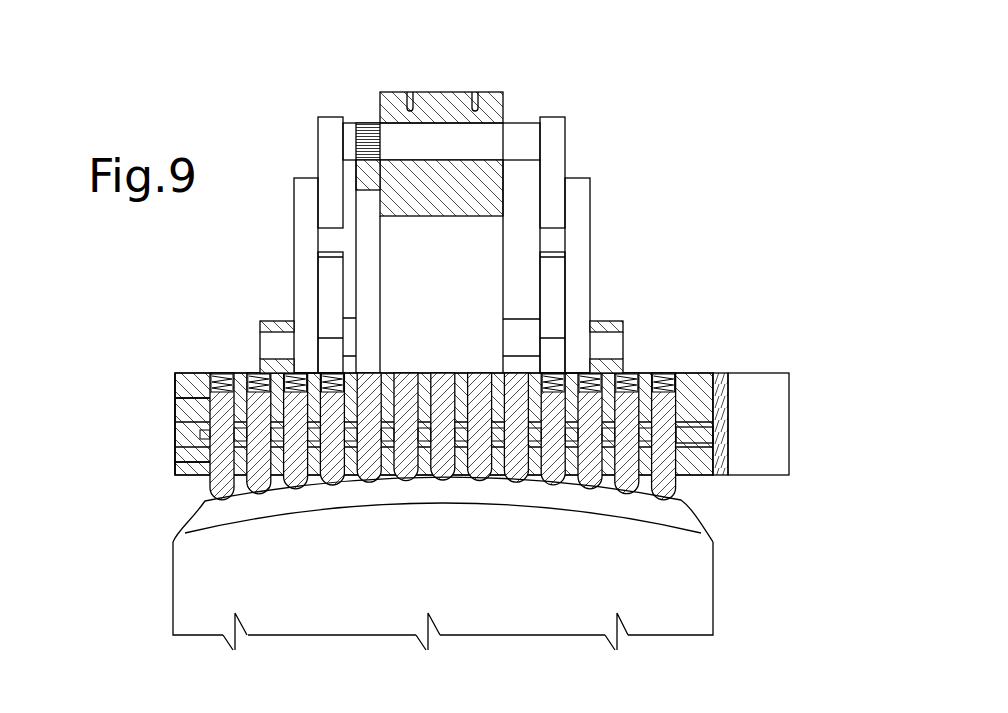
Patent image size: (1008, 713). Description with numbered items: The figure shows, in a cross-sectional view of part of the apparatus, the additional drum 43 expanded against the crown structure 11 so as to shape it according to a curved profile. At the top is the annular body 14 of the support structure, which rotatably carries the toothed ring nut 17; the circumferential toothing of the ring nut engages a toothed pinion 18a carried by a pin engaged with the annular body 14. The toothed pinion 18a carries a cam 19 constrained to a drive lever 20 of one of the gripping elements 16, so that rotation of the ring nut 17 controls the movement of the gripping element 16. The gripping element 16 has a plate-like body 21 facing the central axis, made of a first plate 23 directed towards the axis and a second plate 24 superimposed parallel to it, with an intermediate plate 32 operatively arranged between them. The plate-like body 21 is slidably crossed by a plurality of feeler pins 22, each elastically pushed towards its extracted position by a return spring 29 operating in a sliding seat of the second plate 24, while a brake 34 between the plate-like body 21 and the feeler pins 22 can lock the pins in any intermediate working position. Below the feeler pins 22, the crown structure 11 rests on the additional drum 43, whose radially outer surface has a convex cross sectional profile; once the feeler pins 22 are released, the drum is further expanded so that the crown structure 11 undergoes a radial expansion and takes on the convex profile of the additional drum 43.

The crown structure 11 is at (657, 505).
The annular body 14 is at (437, 105).
The gripping element 16 is at (190, 361).
The toothed ring nut 17 is at (378, 168).
The toothed pinion 18a is at (368, 123).
The cam 19 is at (332, 117).
The drive lever 20 is at (303, 248).
The plate-like body 21 is at (175, 462).
The feeler pin 22 is at (370, 478).
The first plate 23 is at (700, 478).
The second plate 24 is at (697, 397).
The return spring 29 is at (664, 372).
The intermediate plate 32 is at (707, 462).
The brake 34 is at (705, 418).
The additional drum 43 is at (703, 560).